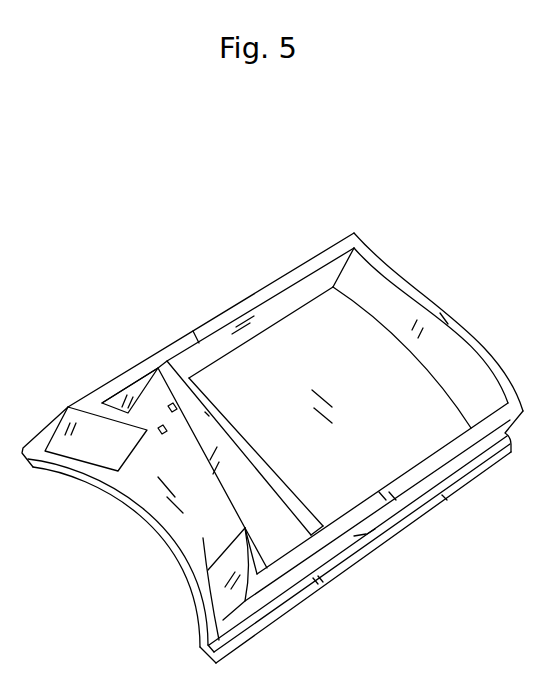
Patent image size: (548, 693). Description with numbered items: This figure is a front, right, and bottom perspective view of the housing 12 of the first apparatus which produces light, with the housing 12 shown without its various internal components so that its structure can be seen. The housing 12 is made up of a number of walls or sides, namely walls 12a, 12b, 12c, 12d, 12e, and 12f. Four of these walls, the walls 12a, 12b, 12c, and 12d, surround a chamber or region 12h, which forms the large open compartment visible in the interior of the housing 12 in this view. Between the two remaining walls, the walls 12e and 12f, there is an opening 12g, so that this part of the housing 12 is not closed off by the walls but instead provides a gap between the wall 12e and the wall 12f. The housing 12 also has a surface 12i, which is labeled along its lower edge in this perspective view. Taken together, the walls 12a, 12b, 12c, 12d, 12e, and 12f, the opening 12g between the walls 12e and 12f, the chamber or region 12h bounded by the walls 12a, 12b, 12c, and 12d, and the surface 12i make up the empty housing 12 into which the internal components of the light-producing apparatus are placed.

The housing 12 is at (220, 297).
The wall 12a is at (291, 273).
The wall 12b is at (396, 288).
The wall 12c is at (439, 478).
The wall 12d is at (261, 503).
The wall 12e is at (124, 453).
The wall 12f is at (227, 568).
The opening 12g is at (185, 522).
The chamber or region 12h is at (376, 390).
The surface 12i is at (147, 470).